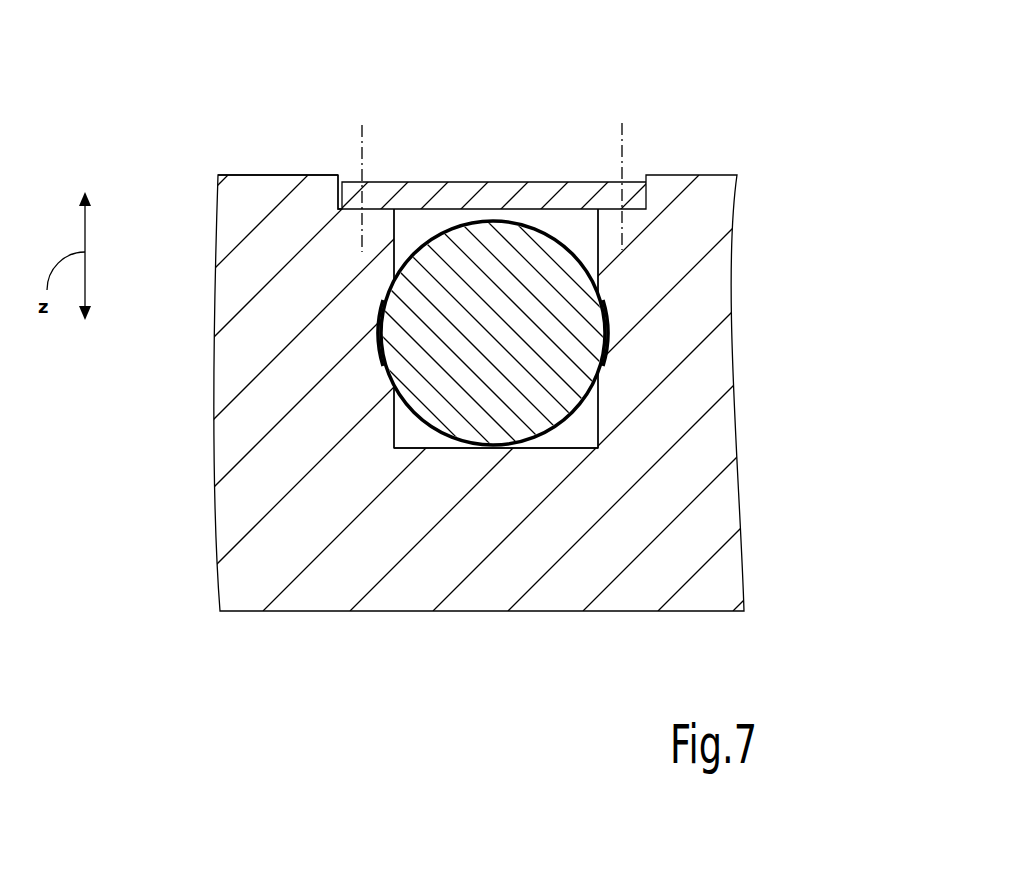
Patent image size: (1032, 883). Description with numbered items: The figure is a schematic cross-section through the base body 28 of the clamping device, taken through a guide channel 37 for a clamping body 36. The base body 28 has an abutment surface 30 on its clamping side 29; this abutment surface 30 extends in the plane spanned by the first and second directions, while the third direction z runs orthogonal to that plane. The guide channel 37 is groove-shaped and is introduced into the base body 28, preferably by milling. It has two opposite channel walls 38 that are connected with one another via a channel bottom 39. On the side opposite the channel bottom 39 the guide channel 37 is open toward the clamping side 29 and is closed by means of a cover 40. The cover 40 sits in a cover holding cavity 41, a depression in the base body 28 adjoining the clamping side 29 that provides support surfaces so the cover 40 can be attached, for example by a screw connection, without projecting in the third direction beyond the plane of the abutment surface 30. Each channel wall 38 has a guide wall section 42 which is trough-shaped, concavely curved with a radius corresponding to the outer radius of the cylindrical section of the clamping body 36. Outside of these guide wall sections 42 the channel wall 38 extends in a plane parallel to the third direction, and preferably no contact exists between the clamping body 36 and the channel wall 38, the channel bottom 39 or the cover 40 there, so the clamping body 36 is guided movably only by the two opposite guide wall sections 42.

The base body 28 is at (725, 553).
The clamping side 29 is at (765, 112).
The abutment surface 30 is at (248, 160).
The clamping body 36 is at (512, 255).
The guide channel 37 is at (586, 428).
The channel wall 38 is at (400, 435).
The channel bottom 39 is at (432, 450).
The cover 40 is at (416, 192).
The cover holding cavity 41 is at (348, 175).
The guide wall section 42 is at (378, 323).